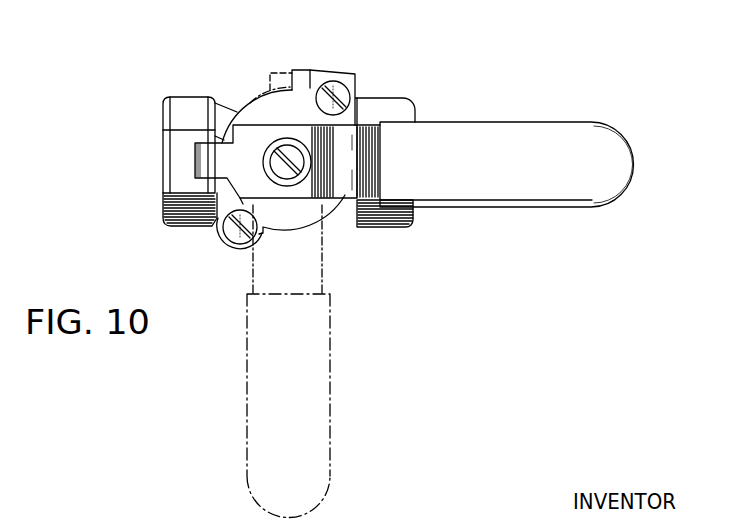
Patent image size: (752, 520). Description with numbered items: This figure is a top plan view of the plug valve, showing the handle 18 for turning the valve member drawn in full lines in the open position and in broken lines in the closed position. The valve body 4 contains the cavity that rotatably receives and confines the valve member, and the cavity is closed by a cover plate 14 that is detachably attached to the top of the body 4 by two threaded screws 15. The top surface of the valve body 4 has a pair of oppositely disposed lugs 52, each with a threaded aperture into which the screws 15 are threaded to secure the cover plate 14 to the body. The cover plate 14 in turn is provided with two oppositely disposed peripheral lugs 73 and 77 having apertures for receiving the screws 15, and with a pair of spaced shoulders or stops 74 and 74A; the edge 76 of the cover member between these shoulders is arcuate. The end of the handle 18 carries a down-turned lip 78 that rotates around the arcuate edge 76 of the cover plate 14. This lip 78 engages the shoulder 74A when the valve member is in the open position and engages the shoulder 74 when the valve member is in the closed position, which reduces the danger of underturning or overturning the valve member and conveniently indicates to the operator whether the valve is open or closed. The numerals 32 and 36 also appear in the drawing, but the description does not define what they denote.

The valve body 4 is at (412, 92).
The cover plate 14 is at (295, 228).
The threaded screws 15 is at (340, 84).
The handle 18 is at (334, 205).
The coupling nut 32 is at (180, 107).
The handle hub 36 is at (416, 110).
The lugs 52 is at (340, 87).
The peripheral lug 73 is at (242, 244).
The shoulder 74 is at (293, 70).
The shoulder 74A is at (197, 167).
The edge 76 is at (244, 116).
The peripheral lug 77 is at (356, 96).
The down-turned lip 78 is at (197, 153).